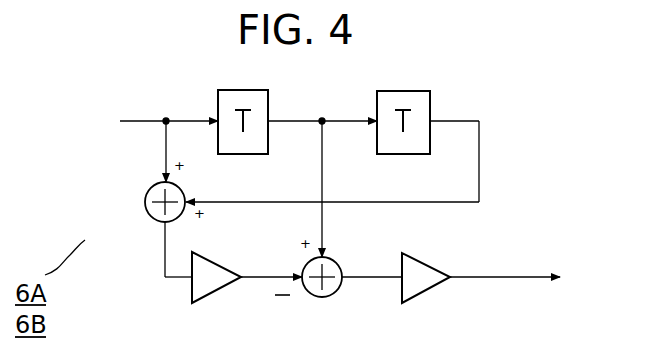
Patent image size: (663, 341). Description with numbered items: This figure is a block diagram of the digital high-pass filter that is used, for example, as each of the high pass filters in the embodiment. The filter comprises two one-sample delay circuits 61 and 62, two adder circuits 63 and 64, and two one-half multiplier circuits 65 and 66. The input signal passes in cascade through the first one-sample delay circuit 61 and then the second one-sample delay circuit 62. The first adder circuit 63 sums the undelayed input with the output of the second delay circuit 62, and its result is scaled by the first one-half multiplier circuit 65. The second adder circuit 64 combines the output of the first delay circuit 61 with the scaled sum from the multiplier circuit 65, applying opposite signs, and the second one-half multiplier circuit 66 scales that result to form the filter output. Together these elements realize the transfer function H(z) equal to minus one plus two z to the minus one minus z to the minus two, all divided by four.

The one-sample delay circuit 61 is at (253, 90).
The one-sample delay circuit 62 is at (412, 91).
The adder circuit 63 is at (150, 190).
The adder circuit 64 is at (335, 262).
The ½ multiplier circuit 65 is at (217, 263).
The ½ multiplier circuit 66 is at (430, 266).